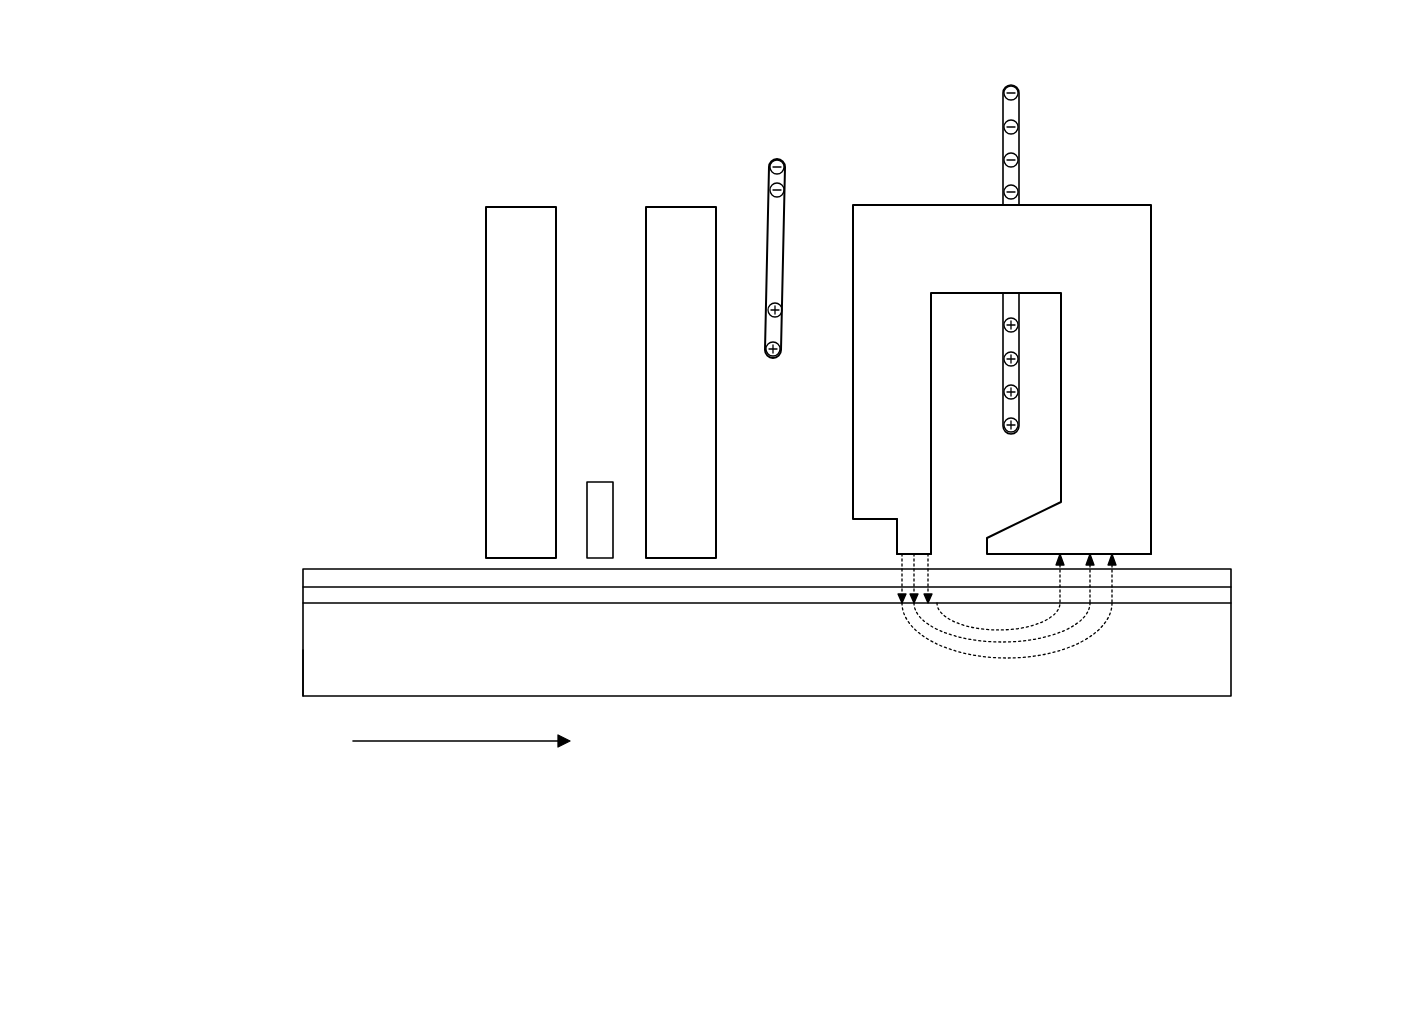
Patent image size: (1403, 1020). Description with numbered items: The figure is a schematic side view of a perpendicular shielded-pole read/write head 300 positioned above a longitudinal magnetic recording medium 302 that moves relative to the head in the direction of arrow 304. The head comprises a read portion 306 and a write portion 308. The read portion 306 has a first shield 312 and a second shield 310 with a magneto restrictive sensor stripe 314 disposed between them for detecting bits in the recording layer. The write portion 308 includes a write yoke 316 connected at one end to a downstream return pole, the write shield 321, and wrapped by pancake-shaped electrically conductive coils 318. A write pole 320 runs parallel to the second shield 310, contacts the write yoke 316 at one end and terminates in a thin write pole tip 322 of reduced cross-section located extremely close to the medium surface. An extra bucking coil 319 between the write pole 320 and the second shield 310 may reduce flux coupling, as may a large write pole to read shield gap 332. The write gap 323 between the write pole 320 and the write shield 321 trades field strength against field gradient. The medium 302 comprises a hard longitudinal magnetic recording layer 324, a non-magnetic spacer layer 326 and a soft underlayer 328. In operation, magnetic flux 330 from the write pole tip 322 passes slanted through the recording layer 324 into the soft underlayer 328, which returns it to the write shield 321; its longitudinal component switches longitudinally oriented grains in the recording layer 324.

The read/write head 300 is at (1201, 170).
The magnetic recording medium 302 is at (786, 620).
The arrow 304 is at (458, 741).
The read portion 306 is at (721, 178).
The write portion 308 is at (1168, 80).
The second shield 310 is at (710, 387).
The first shield 312 is at (497, 309).
The magneto restrictive (MR) sensor stripe 314 is at (598, 496).
The write yoke 316 is at (957, 254).
The electrically conductive coils 318 is at (1020, 123).
The bucking coil 319 is at (777, 152).
The write pole 320 is at (921, 479).
The write shield 321 is at (1134, 427).
The write pole tip 322 is at (910, 538).
The write gap 323 is at (977, 551).
The magnetic recording layer 324 is at (302, 582).
The non-magnetic spacer layer 326 is at (302, 600).
The soft underlayer (SUL) 328 is at (302, 643).
The magnetic flux 330 is at (937, 579).
The write pole to read shield gap 332 is at (793, 477).